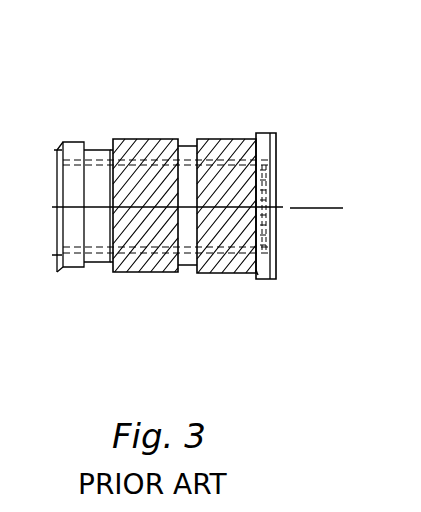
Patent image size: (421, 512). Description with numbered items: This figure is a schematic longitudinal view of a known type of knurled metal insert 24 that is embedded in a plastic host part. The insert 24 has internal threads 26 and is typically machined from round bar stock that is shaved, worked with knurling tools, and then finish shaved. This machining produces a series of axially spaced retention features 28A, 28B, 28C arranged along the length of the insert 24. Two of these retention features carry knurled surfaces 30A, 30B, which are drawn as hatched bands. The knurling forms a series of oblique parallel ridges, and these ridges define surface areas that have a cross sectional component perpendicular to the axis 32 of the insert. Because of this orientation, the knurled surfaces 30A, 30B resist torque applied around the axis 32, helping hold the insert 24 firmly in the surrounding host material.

The knurled metal insert 24 is at (182, 70).
The internal threads 26 is at (283, 167).
The retention feature 28A is at (222, 275).
The retention feature 28B is at (138, 273).
The retention feature 28C is at (72, 268).
The knurled surface 30A is at (213, 138).
The knurled surface 30B is at (132, 138).
The axis 32 is at (295, 207).